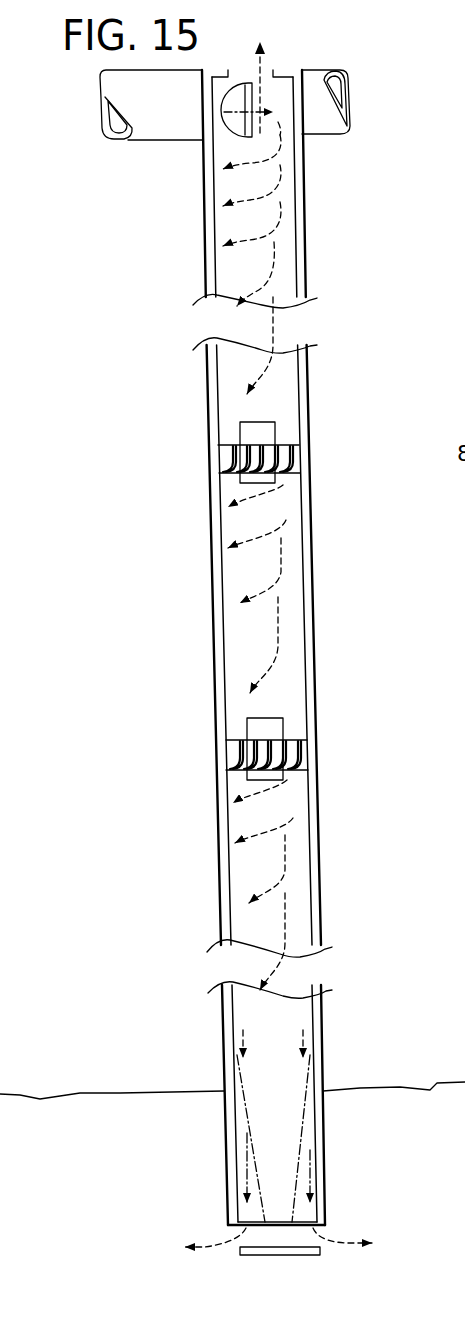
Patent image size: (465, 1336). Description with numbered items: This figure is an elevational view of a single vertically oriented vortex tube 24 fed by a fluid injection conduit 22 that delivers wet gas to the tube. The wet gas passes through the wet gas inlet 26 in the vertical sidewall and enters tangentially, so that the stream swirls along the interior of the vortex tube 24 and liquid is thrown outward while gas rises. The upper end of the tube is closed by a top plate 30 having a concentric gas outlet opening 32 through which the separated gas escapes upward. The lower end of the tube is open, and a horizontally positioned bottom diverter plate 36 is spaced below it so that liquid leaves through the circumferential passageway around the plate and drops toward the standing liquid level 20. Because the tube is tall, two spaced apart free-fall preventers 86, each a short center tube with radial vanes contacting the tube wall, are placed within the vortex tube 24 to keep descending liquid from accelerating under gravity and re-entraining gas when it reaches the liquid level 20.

The liquid level 20 is at (172, 1090).
The fluid injection conduit 22 is at (323, 132).
The vortex tube 24 is at (212, 638).
The wet gas inlet 26 is at (238, 128).
The top plate 30 is at (290, 68).
The gas outlet opening 32 is at (268, 68).
The bottom diverter plate 36 is at (322, 1250).
The free-fall preventer 86 is at (192, 442).